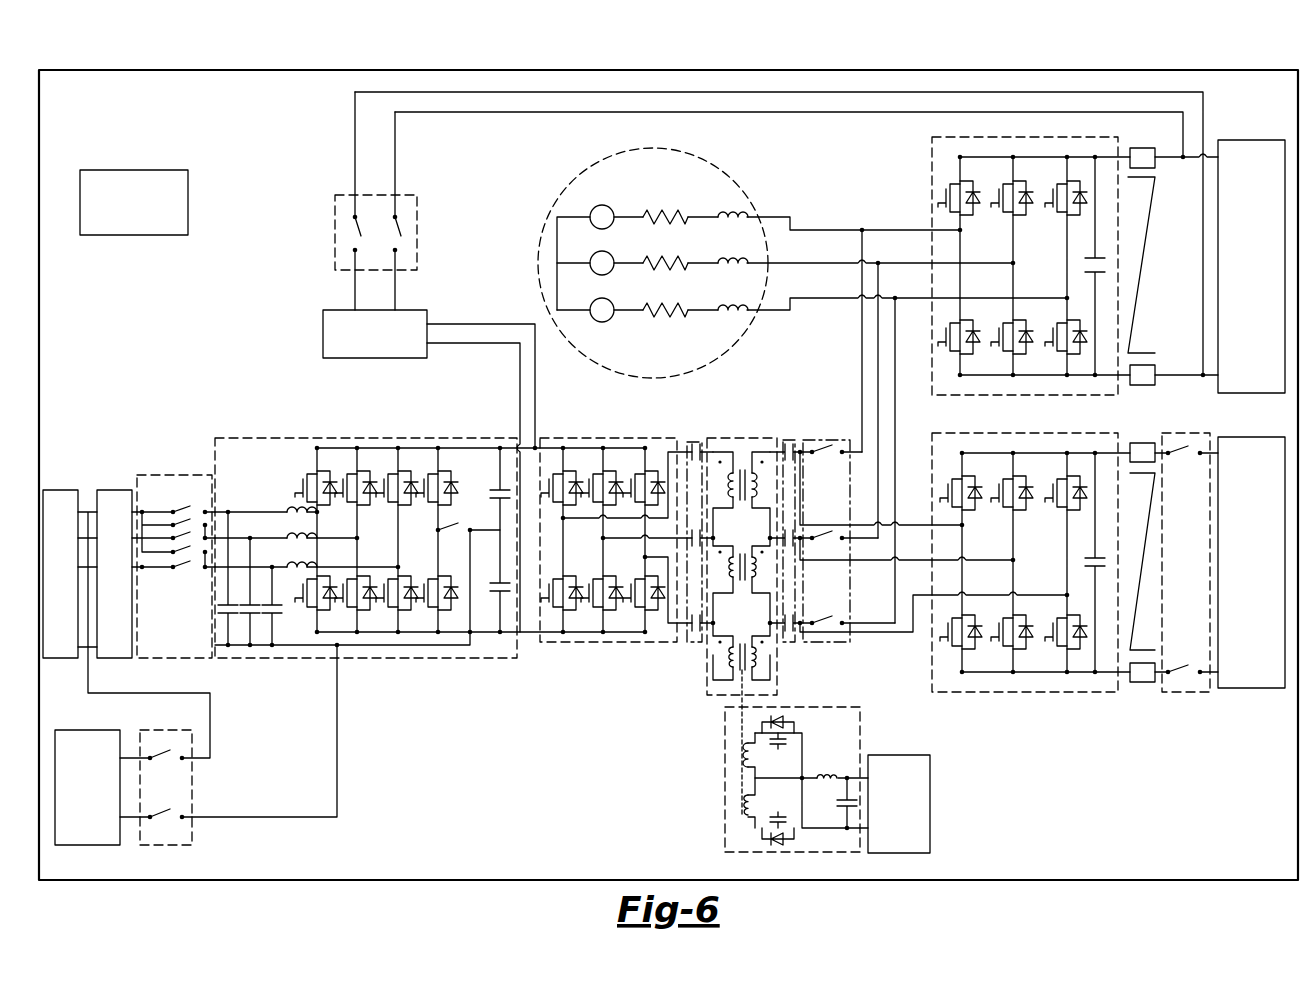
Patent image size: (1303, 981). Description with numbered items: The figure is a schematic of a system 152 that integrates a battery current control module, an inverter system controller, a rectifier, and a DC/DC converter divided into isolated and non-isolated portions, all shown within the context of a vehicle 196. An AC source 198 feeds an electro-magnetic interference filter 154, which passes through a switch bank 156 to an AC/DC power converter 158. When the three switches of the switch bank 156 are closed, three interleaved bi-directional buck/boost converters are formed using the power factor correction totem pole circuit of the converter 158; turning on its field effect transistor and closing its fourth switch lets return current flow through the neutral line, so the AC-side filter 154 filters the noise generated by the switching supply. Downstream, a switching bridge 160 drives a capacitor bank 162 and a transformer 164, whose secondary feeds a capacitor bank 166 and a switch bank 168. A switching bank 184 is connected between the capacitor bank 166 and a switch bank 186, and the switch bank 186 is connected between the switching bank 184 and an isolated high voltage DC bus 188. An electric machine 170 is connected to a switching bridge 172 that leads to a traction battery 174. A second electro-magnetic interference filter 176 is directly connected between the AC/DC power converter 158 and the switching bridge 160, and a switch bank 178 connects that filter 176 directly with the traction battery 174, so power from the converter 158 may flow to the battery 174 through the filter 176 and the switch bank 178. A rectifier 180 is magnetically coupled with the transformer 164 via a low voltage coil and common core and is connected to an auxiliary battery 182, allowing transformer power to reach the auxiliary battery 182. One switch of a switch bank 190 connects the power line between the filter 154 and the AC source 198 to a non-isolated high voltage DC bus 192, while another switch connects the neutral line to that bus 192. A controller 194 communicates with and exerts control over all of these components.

The system 152 is at (299, 831).
The electro-magnetic interference filter 154 is at (114, 490).
The switch bank 156 is at (178, 475).
The AC/DC power converter 158 is at (345, 438).
The switching bridge 160 is at (608, 642).
The capacitor bank 162 is at (690, 642).
The transformer 164 is at (740, 438).
The capacitor bank 166 is at (790, 642).
The switch bank 168 is at (825, 642).
The electric machine 170 is at (538, 267).
The switching bridge 172 is at (932, 148).
The traction battery 174 is at (1248, 140).
The electro-magnetic interference filter 176 is at (323, 340).
The switch bank 178 is at (335, 236).
The rectifier 180 is at (725, 779).
The auxiliary battery 182 is at (900, 755).
The switching bank 184 is at (1025, 692).
The switch bank 186 is at (1185, 692).
The isolated high voltage DC bus 188 is at (1250, 688).
The switch bank 190 is at (192, 785).
The non-isolated high voltage DC bus 192 is at (66, 730).
The controller 194 is at (134, 170).
The vehicle 196 is at (665, 70).
The AC source 198 is at (60, 490).